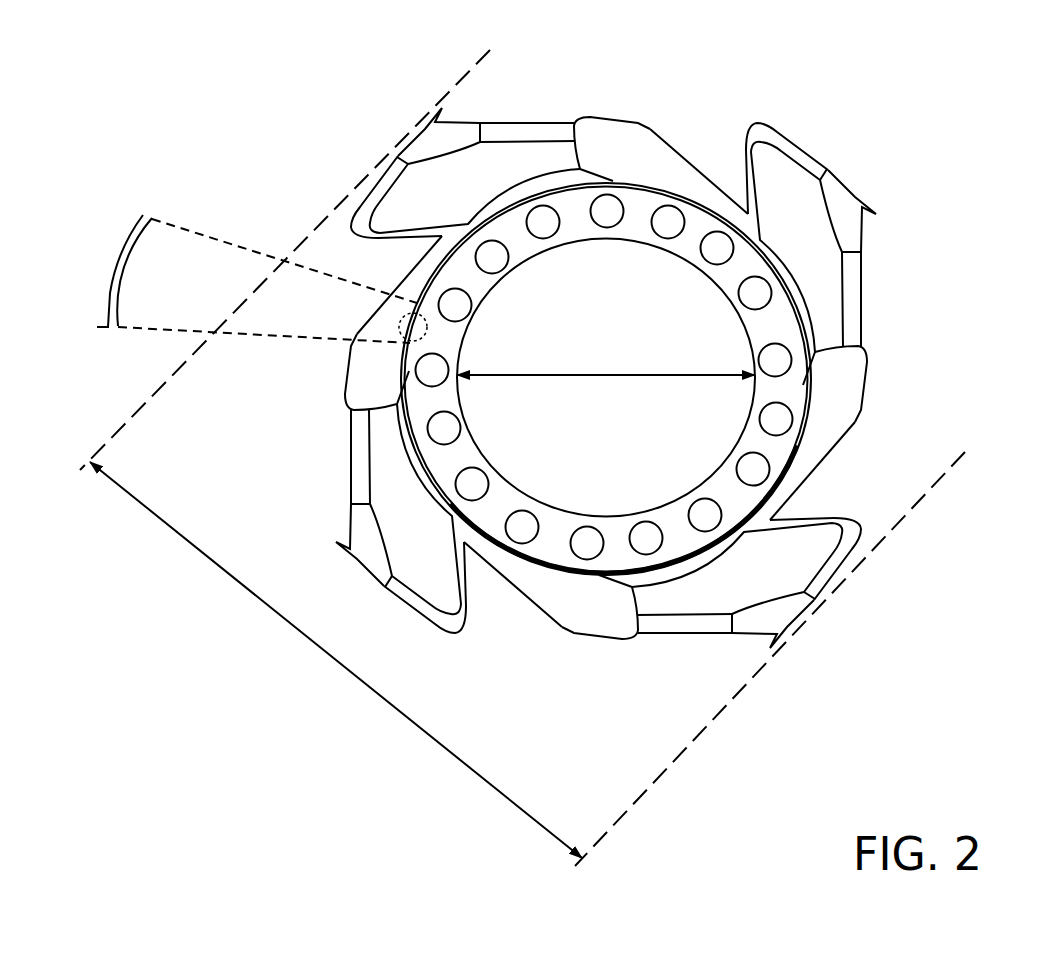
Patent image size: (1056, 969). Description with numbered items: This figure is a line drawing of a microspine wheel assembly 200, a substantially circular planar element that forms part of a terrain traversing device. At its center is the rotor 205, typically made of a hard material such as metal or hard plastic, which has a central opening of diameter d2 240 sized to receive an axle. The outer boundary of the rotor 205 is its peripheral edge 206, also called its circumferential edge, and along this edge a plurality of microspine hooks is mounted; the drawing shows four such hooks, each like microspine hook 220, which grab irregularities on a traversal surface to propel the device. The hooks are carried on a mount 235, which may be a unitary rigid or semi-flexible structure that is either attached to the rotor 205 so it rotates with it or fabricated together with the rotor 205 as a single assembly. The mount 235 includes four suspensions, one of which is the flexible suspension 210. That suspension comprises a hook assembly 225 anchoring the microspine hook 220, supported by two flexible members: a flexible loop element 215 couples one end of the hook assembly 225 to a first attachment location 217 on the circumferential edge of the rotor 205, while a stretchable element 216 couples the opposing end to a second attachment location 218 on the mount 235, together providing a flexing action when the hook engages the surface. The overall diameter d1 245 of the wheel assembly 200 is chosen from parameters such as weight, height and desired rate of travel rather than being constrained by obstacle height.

The microspine wheel assembly 200 is at (251, 90).
The rotor 205 is at (777, 453).
The peripheral edge 206 is at (121, 274).
The flexible suspension 210 is at (850, 306).
The flexible loop element 215 is at (803, 156).
The stretchable element 216 is at (859, 301).
The first attachment location 217 is at (737, 197).
The second attachment location 218 is at (870, 352).
The microspine hook 220 is at (872, 212).
The hook assembly 225 is at (861, 228).
The mount 235 is at (827, 413).
The diameter d2 240 is at (606, 372).
The diameter d1 245 is at (522, 458).